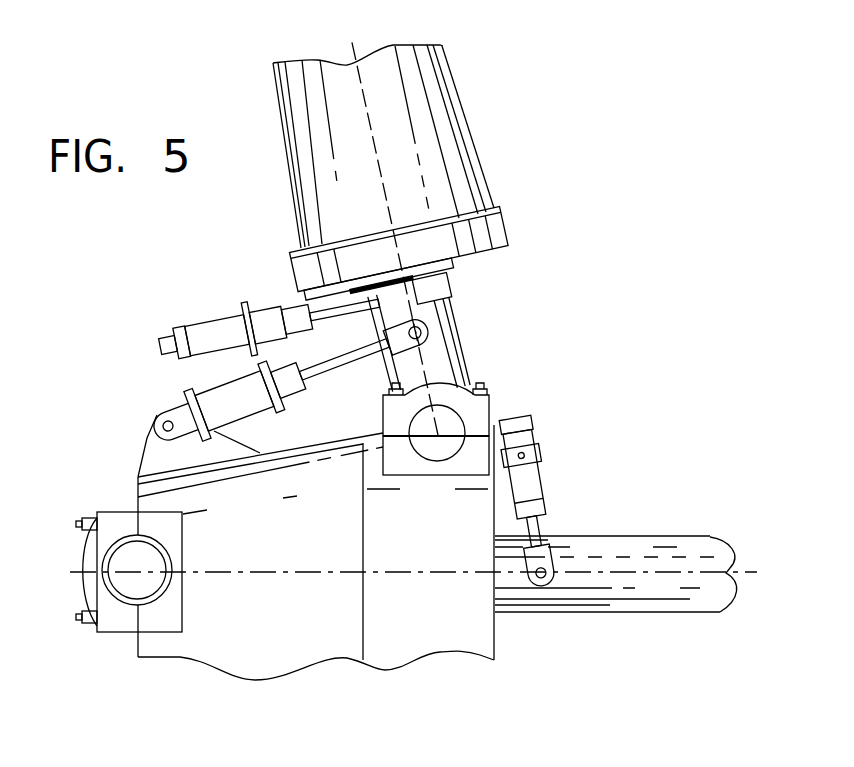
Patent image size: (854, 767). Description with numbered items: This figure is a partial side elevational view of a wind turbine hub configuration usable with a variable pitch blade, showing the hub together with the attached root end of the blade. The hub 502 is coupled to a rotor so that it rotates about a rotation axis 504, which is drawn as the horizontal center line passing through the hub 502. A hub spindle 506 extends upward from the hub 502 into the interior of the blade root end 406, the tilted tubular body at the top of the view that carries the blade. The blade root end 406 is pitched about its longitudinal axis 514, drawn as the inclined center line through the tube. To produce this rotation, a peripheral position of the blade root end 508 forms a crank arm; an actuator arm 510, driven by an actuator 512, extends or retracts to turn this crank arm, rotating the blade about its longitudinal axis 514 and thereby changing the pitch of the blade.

The blade root end 406 is at (475, 147).
The hub 502 is at (497, 655).
The rotation axis 504 is at (625, 572).
The hub spindle 506 is at (460, 343).
The peripheral position of blade root end 508 is at (437, 295).
The actuator arm 510 is at (322, 279).
The actuator 512 is at (203, 330).
The longitudinal axis 514 is at (350, 52).